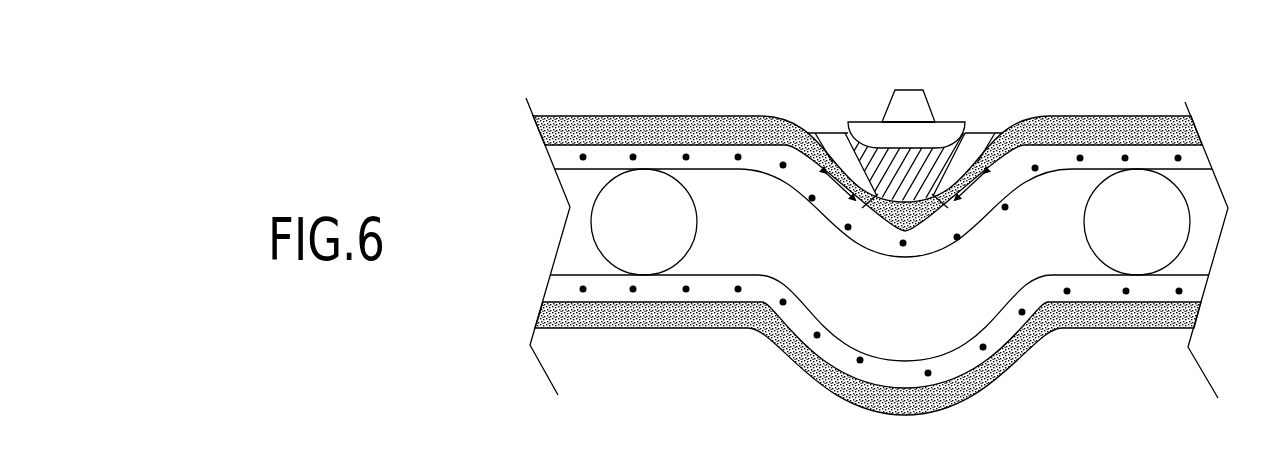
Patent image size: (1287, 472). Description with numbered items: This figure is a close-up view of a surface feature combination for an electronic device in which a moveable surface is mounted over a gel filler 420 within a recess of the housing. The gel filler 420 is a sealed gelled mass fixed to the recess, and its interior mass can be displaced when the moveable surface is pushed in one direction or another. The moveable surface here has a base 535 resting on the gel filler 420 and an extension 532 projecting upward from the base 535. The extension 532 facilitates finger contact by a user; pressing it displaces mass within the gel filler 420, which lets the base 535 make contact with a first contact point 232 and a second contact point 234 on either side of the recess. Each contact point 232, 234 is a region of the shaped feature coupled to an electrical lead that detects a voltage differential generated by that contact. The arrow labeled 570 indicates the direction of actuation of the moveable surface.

The first contact point 232 is at (847, 137).
The second contact point 234 is at (993, 137).
The base 535 is at (868, 121).
The extension 532 is at (900, 88).
The light emitting package 570 is at (936, 87).
The gel filler 420 is at (977, 133).